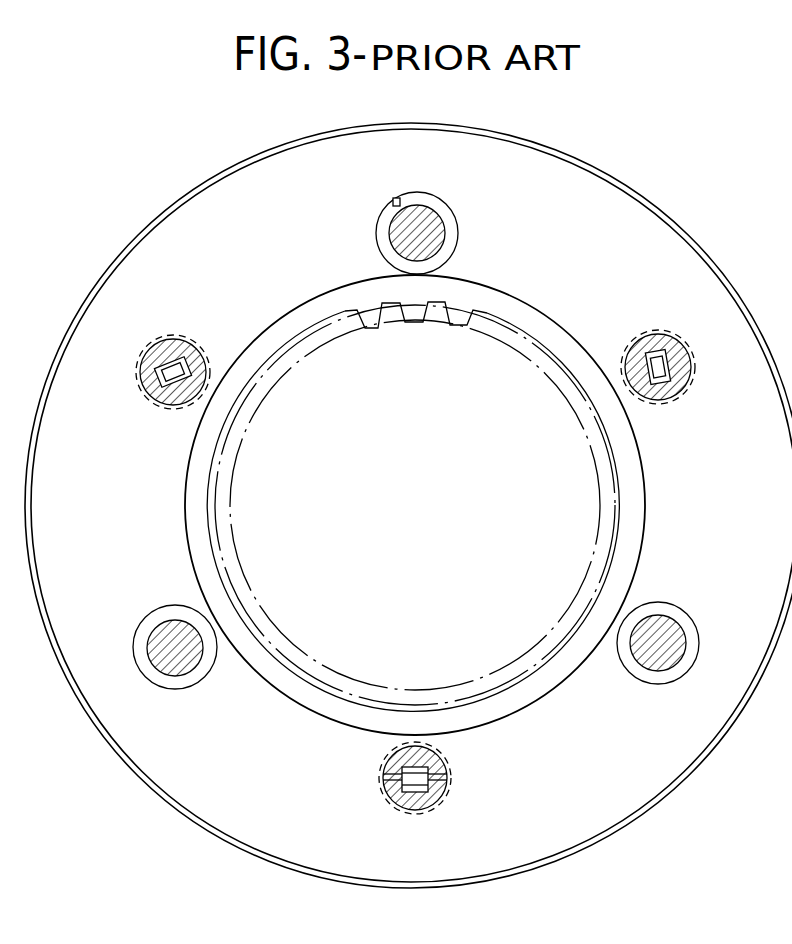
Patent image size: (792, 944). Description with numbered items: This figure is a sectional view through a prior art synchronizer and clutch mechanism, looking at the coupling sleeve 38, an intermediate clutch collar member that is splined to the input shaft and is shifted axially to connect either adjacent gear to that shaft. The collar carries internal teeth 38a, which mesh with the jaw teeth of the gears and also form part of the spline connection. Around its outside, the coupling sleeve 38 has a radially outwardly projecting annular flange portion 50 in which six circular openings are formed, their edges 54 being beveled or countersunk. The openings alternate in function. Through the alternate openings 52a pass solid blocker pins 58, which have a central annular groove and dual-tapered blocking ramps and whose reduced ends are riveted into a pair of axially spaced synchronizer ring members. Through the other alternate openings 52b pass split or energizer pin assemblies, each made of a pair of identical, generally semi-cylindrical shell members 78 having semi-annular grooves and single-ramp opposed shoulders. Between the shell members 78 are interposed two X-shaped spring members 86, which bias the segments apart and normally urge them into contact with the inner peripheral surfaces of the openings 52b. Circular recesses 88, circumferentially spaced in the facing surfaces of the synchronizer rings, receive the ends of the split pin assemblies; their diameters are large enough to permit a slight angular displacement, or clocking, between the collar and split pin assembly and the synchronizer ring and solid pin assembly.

The annular flange portion 50 is at (668, 262).
The coupling sleeve 38 is at (527, 316).
The internal teeth 38a is at (372, 318).
The alternate openings 52a is at (450, 238).
The other alternate openings 52b is at (176, 327).
The edges 54 is at (395, 203).
The blocker pins 58 is at (432, 226).
The shell members 78 is at (397, 755).
The spring members 86 is at (432, 762).
The circular recesses 88 is at (452, 780).